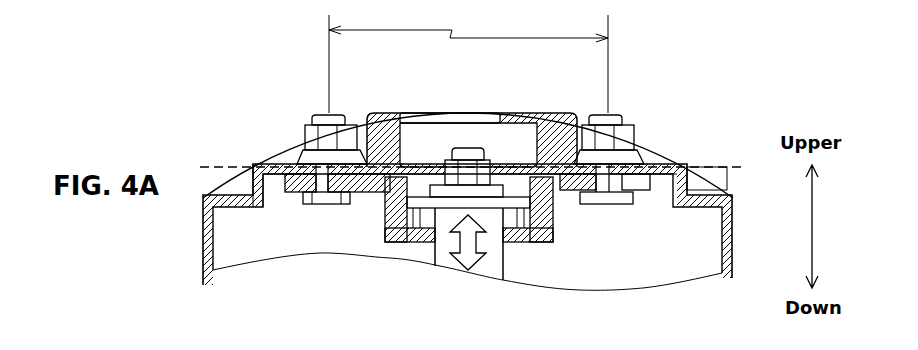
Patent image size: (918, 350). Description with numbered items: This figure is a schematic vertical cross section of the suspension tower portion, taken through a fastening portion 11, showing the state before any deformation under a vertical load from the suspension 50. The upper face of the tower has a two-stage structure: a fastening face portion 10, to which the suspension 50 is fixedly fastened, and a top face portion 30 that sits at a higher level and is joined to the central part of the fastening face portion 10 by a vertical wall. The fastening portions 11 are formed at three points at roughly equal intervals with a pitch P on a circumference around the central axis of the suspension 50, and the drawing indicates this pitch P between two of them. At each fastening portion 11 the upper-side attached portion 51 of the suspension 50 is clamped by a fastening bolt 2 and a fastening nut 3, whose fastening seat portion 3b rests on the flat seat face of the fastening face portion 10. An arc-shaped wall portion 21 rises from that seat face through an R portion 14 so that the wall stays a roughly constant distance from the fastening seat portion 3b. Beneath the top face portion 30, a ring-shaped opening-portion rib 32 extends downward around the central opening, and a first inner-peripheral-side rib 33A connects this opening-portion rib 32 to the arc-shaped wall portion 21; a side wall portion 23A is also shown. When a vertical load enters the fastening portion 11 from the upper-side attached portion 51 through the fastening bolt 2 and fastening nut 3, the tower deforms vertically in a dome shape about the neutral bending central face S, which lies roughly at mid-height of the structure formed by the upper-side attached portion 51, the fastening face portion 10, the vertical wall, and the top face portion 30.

The fastening bolt 2 is at (655, 132).
The fastening nut 3 is at (628, 140).
The fastening seat portion 3b is at (636, 156).
The fastening face portion 10 is at (283, 163).
The fastening portion 11 is at (303, 119).
The R portion 14 is at (361, 148).
The arc-shaped wall portion 21 is at (370, 116).
The side wall portion 23A is at (242, 167).
The top face portion 30 is at (472, 109).
The opening-portion rib 32 is at (402, 143).
The first inner-peripheral-side rib 33A is at (399, 114).
The suspension 50 is at (504, 254).
The upper-side attached portion 51 is at (578, 208).
The bending central face S is at (734, 168).
The pitch P is at (468, 61).